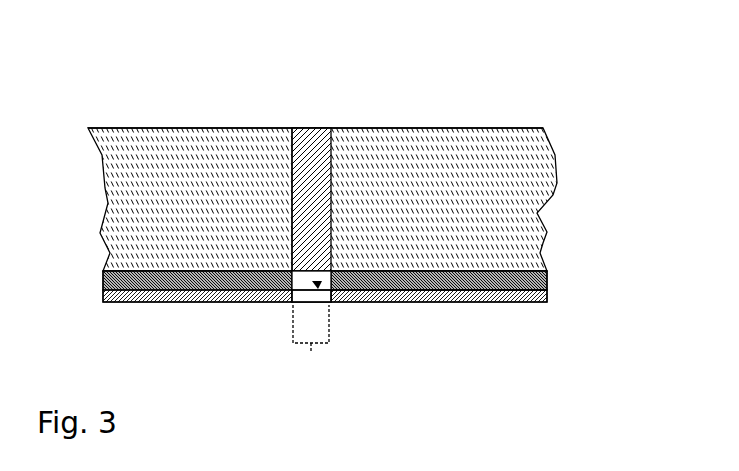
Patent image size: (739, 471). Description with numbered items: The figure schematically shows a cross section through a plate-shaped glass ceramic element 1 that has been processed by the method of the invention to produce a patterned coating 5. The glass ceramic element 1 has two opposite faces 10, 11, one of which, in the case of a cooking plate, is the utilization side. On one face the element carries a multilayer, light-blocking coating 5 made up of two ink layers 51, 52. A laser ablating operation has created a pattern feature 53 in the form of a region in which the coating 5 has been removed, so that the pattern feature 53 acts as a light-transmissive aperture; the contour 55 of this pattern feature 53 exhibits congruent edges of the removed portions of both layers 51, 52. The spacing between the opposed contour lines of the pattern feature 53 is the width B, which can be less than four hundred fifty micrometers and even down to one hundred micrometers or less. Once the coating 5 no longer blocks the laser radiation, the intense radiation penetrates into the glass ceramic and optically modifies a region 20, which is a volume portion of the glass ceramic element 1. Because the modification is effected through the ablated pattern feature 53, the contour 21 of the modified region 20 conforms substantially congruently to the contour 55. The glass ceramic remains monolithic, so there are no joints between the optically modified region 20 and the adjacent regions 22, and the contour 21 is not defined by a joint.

The glass ceramic element 1 is at (197, 143).
The adjacent regions 22 is at (230, 165).
The contour of modified region 21 is at (292, 128).
The optically modified region 20 is at (312, 153).
The face 11 is at (348, 128).
The coating 5 is at (351, 342).
The ink layer 51 is at (192, 302).
The ink layer 52 is at (153, 305).
The pattern feature 53 is at (320, 284).
The face 10 is at (485, 290).
The contour of pattern feature 55 is at (296, 292).
The width B is at (311, 344).